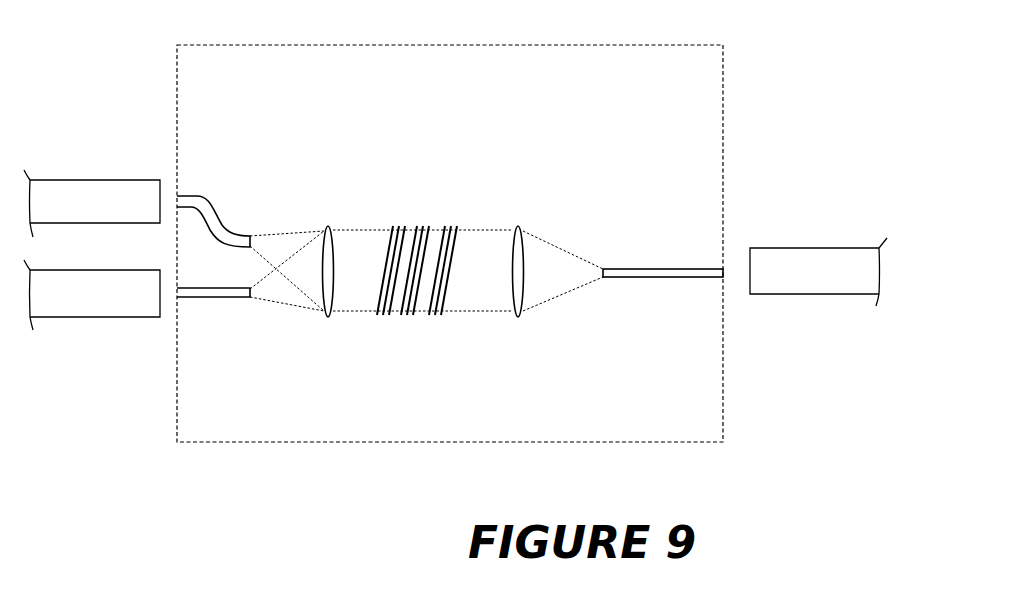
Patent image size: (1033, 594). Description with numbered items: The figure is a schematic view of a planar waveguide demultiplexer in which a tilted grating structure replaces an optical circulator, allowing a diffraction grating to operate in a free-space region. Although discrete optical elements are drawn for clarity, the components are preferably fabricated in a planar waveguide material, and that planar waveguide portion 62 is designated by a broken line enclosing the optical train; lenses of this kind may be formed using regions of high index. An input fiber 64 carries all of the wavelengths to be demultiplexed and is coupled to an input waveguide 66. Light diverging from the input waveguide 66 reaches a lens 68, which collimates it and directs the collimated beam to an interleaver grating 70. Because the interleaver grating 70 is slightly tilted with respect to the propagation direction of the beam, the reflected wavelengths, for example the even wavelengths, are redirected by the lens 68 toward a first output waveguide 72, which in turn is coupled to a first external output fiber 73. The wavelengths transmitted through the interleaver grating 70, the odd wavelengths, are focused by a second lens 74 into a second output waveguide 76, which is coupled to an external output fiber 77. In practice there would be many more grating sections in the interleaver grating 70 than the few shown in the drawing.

The planar waveguide portion 62 is at (726, 108).
The input fiber 64 is at (107, 310).
The input waveguide 66 is at (227, 293).
The lens 68 is at (325, 318).
The interleaver grating 70 is at (462, 213).
The first output waveguide 72 is at (208, 208).
The first external output fiber 73 is at (87, 188).
The lens 74 is at (518, 323).
The second output waveguide 76 is at (643, 273).
The external output fiber 77 is at (787, 252).